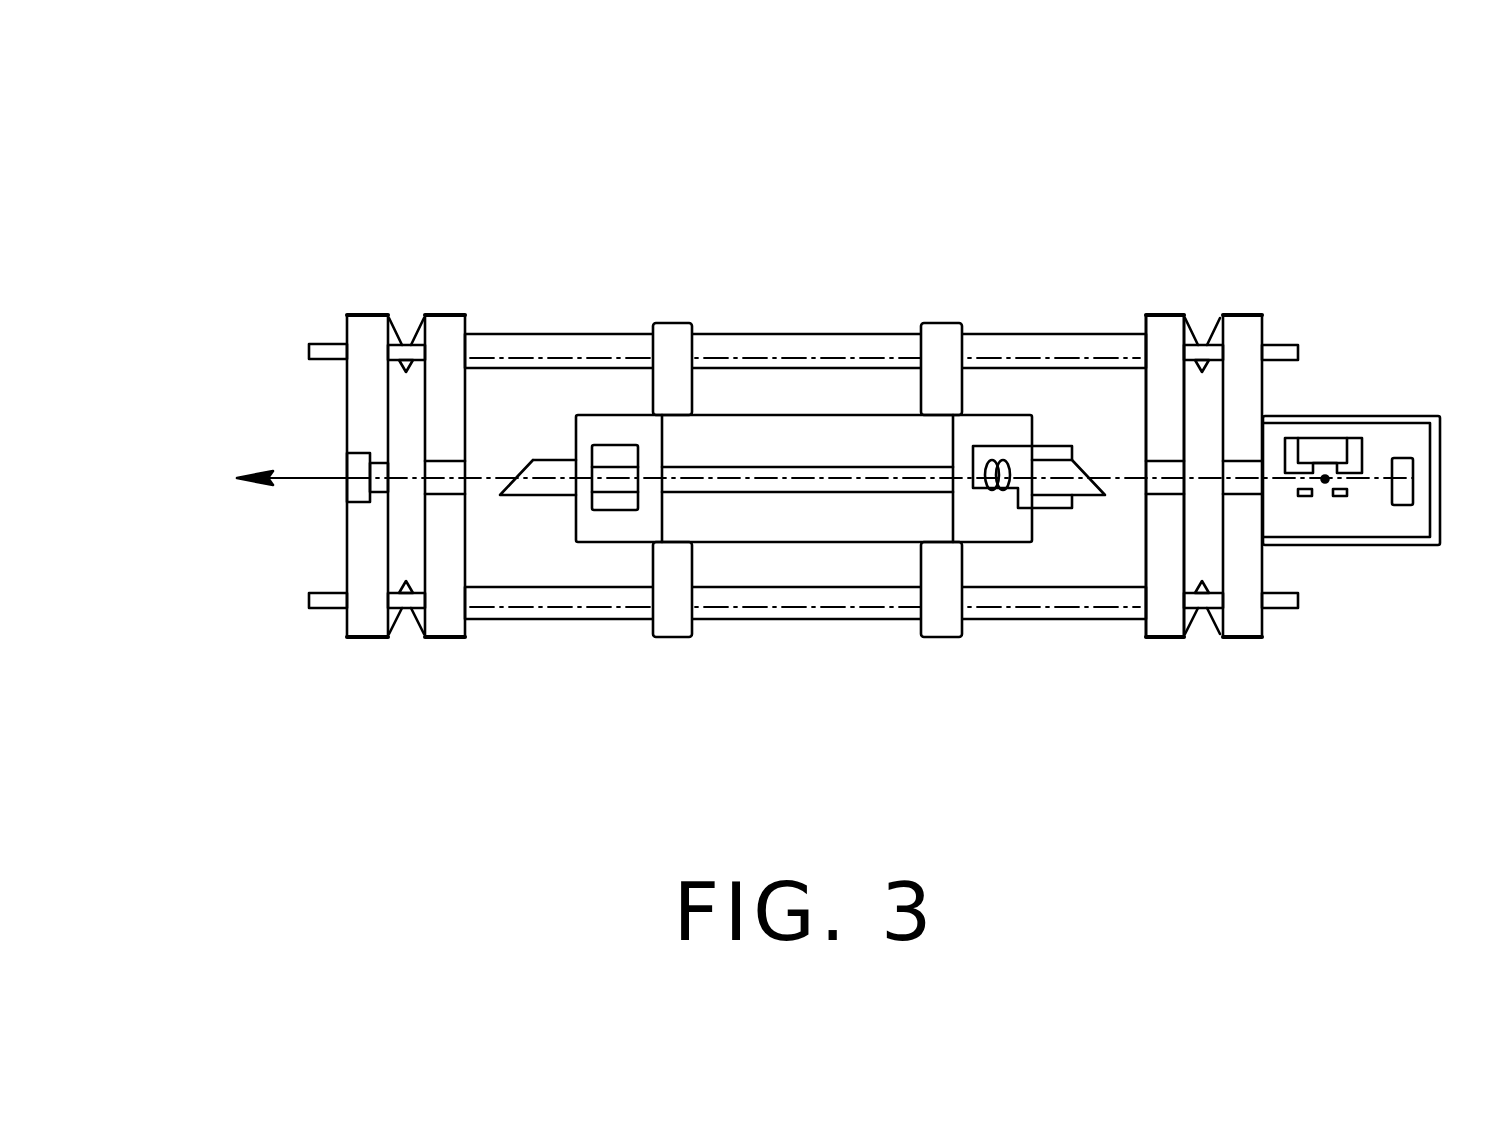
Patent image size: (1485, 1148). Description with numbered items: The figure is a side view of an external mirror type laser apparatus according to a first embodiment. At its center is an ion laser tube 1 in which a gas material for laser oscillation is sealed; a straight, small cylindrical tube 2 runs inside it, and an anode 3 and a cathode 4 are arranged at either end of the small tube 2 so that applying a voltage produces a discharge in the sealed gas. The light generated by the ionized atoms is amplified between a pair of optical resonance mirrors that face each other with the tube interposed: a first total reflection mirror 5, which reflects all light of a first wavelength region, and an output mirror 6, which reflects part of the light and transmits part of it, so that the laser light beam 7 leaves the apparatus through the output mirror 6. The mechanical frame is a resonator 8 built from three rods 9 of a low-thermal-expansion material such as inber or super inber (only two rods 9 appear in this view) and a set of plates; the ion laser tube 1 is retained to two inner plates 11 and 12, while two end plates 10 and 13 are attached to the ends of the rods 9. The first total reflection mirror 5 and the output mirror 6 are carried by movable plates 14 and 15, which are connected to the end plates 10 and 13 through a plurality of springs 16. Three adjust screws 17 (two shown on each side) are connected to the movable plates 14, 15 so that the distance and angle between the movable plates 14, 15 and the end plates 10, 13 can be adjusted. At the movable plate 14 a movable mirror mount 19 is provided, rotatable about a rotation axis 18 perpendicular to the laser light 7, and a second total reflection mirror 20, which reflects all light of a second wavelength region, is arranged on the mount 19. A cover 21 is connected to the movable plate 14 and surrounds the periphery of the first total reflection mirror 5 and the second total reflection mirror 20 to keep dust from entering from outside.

The ion laser tube 1 is at (760, 415).
The small cylindrical tube 2 is at (810, 467).
The anode 3 is at (613, 518).
The cathode 4 is at (993, 508).
The first total reflection mirror 5 is at (1412, 455).
The output mirror 6 is at (345, 462).
The laser light beam 7 is at (248, 447).
The resonator 8 is at (732, 619).
The rods 9 is at (583, 334).
The plate 10 is at (1130, 543).
The plate 11 is at (945, 323).
The plate 12 is at (672, 323).
The plate 13 is at (468, 553).
The movable plate 14 is at (1222, 437).
The movable plate 15 is at (337, 558).
The springs 16 is at (445, 318).
The adjust screws 17 is at (322, 344).
The rotation axis 18 is at (1320, 490).
The movable mirror mount 19 is at (1340, 500).
The second total reflection mirror 20 is at (1330, 438).
The cover 21 is at (1420, 557).